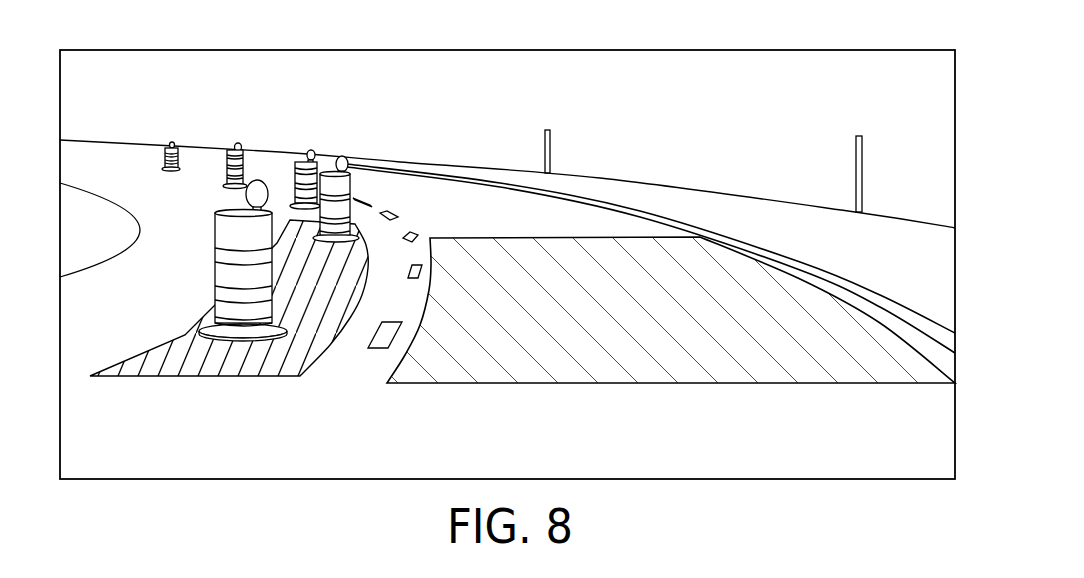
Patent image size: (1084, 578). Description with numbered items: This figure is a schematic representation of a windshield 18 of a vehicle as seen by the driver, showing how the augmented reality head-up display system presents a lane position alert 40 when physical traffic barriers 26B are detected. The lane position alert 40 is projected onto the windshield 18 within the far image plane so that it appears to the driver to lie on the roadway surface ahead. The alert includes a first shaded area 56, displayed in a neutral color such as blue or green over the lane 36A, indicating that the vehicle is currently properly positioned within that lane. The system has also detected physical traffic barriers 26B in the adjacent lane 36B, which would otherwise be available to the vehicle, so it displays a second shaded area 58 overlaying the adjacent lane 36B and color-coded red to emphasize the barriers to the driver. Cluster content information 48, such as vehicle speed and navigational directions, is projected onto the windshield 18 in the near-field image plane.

The windshield 18 is at (791, 50).
The physical traffic barriers 26B is at (225, 228).
The lane 36A is at (496, 221).
The adjacent lane 36B is at (172, 307).
The lane position alert 40 is at (522, 326).
The first shaded area 56 is at (687, 357).
The second shaded area 58 is at (233, 362).
The cluster content information 48 is at (227, 426).